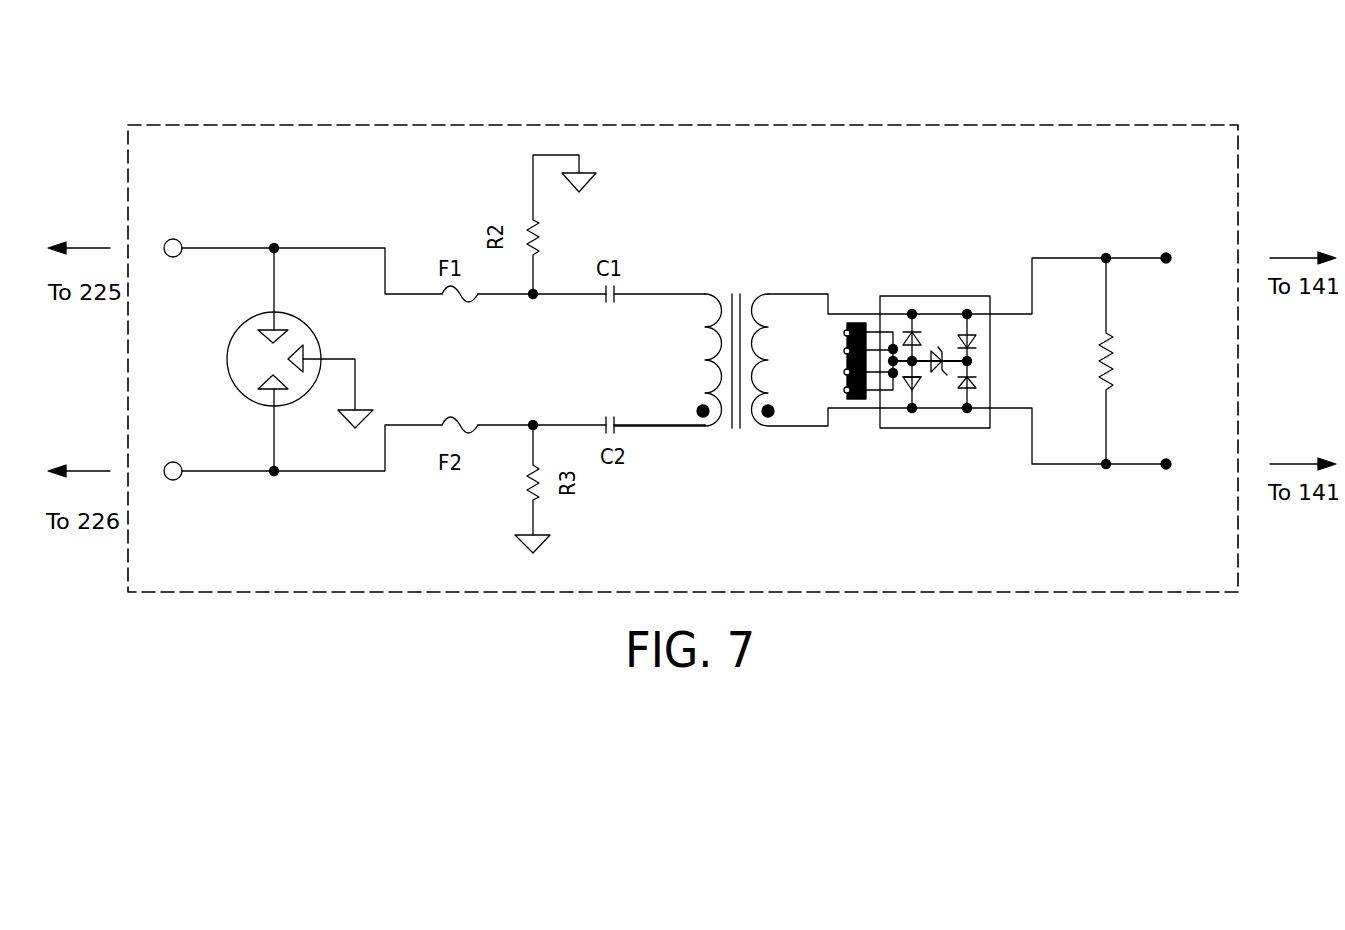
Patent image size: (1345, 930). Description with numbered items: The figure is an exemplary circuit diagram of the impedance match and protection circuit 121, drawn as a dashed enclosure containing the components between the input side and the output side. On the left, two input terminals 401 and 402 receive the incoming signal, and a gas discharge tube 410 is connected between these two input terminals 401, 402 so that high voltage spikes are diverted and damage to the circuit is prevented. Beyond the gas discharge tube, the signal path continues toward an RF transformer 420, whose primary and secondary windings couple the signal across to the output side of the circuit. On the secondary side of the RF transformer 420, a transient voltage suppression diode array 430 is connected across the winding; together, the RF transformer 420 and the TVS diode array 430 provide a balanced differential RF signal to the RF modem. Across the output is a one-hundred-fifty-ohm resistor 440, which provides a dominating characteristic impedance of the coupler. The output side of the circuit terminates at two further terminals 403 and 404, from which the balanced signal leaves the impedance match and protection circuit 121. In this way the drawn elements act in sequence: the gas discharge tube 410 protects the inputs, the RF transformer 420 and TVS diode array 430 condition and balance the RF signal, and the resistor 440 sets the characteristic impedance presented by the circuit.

The impedance match and protection circuit 121 is at (786, 116).
The input terminal 401 is at (172, 238).
The input terminal 402 is at (172, 481).
The output terminal 403 is at (1166, 252).
The output terminal 404 is at (1166, 470).
The gas discharge tube 410 is at (293, 338).
The RF transformer 420 is at (737, 432).
The transient voltage suppression (TVS) diode array 430 is at (923, 302).
The 150 ohm resistor 440 is at (1117, 379).